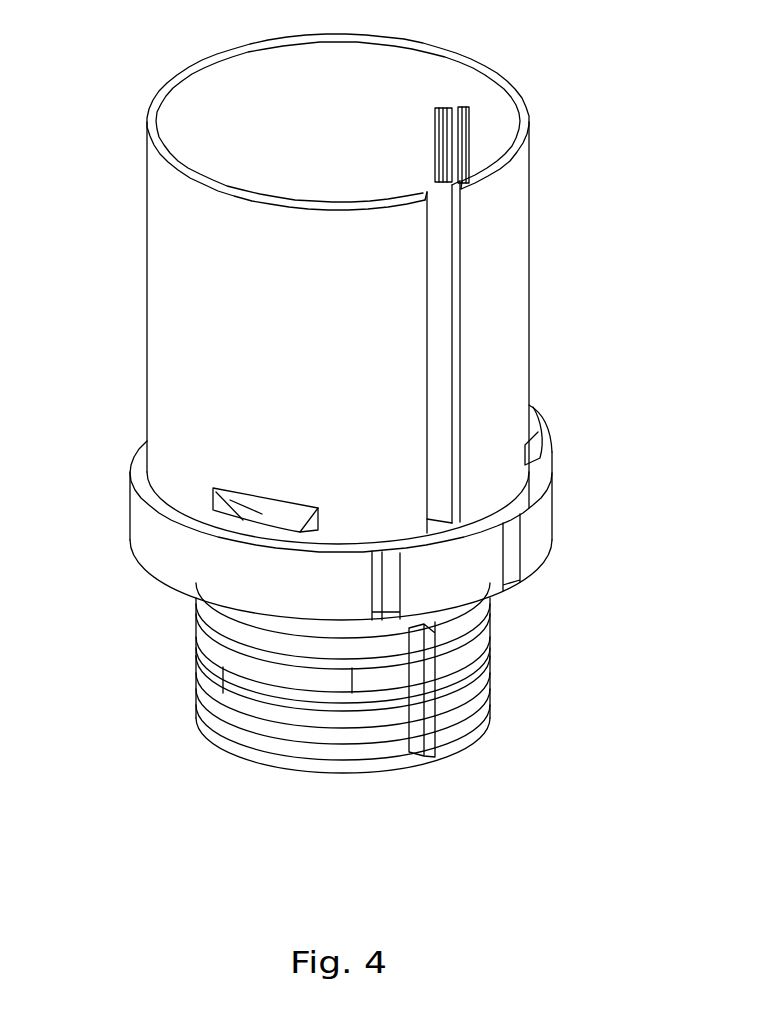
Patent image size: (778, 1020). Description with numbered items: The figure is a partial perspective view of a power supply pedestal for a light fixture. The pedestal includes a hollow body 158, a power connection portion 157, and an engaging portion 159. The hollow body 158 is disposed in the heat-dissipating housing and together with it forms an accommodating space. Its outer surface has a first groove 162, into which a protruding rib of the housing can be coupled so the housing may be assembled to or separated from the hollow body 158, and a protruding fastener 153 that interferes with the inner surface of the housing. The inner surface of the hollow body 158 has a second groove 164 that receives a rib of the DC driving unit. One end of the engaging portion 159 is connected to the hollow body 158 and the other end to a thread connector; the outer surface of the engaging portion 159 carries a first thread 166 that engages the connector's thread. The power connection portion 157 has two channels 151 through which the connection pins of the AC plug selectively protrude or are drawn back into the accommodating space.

The channels 151 is at (377, 590).
The protruding fastener 153 is at (217, 492).
The power connection portion 157 is at (453, 570).
The hollow body 158 is at (510, 210).
The engaging portion 159 is at (498, 669).
The first groove 162 is at (445, 347).
The second groove 164 is at (433, 116).
The first thread 166 is at (210, 690).